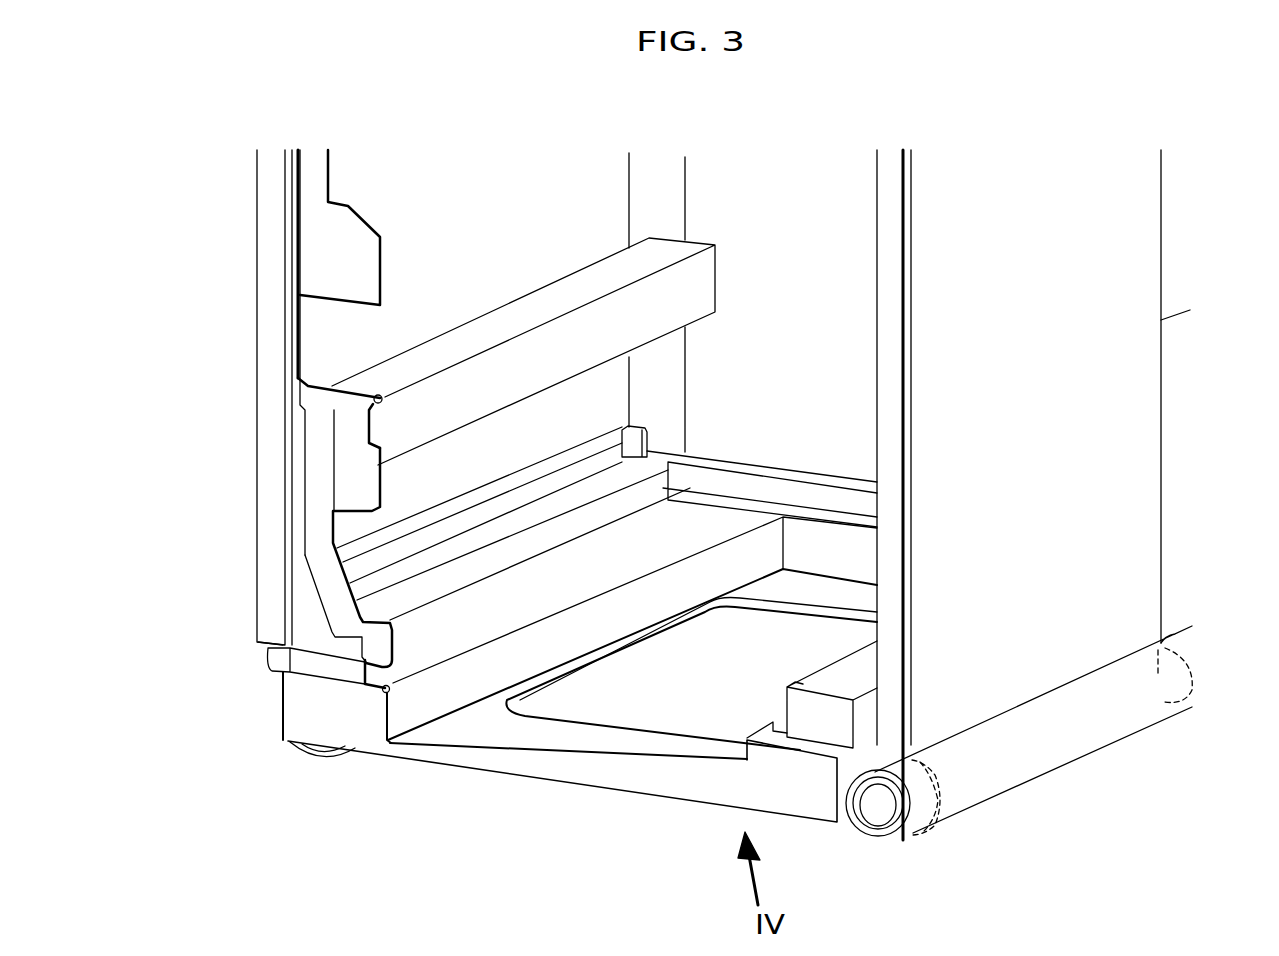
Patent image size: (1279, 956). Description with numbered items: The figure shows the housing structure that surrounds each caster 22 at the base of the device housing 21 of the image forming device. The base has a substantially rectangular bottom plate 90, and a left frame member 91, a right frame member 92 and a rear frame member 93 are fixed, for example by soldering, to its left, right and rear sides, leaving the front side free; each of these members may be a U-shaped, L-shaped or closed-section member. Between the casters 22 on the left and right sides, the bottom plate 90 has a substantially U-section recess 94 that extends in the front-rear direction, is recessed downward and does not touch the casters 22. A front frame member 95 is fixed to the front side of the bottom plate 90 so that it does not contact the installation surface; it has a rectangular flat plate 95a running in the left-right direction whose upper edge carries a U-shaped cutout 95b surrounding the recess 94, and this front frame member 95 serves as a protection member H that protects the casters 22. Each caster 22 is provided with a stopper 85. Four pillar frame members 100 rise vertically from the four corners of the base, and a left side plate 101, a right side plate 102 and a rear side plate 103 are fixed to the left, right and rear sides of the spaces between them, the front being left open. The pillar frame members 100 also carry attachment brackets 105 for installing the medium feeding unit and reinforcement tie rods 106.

The device housing 21 is at (1178, 468).
The caster 22 is at (286, 752).
The stopper 85 is at (940, 763).
The bottom plate 90 is at (632, 625).
The left frame member 91 is at (400, 592).
The right frame member 92 is at (847, 676).
The rear frame member 93 is at (818, 497).
The recess 94 is at (625, 748).
The front frame member 95 is at (725, 752).
The flat plate 95a is at (370, 728).
The U-shaped cutout 95b is at (522, 757).
The pillar frame member 100 is at (293, 408).
The left side plate 101 is at (340, 328).
The right side plate 102 is at (1110, 290).
The rear side plate 103 is at (796, 234).
The attachment bracket 105 is at (332, 245).
The reinforcement tie rod 106 is at (403, 422).